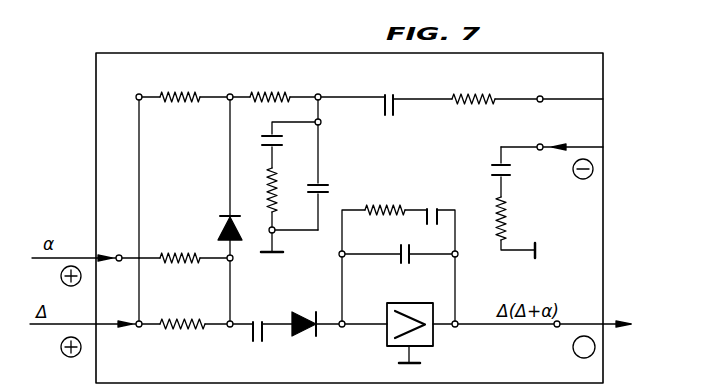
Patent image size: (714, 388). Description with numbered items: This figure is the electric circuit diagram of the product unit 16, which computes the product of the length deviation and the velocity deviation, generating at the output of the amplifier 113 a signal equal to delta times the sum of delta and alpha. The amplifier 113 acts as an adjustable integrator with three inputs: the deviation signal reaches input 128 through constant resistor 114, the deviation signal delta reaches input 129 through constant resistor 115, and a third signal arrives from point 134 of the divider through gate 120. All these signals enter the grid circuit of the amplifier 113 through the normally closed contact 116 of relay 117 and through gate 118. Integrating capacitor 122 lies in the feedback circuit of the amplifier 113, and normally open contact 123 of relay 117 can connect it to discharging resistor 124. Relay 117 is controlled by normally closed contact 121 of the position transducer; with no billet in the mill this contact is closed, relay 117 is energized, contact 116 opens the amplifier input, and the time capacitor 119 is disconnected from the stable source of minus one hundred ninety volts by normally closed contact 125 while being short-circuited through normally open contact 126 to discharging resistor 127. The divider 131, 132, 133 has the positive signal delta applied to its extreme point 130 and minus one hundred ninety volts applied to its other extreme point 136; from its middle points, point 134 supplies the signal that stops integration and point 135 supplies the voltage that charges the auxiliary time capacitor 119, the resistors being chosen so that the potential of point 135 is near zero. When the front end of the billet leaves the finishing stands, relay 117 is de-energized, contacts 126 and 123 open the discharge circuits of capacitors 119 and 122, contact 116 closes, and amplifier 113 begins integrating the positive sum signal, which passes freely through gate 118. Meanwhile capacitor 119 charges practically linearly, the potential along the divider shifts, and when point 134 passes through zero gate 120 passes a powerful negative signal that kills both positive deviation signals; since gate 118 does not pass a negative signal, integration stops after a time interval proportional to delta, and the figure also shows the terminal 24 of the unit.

The product unit 16 is at (107, 105).
The terminal 24 is at (552, 136).
The amplifier 113 is at (427, 335).
The constant resistor 114 is at (186, 278).
The constant resistor 115 is at (187, 315).
The normally closed contact 116 is at (262, 321).
The relay 117 is at (521, 227).
The gate 118 is at (337, 296).
The time capacitor 119 is at (315, 177).
The gate 120 is at (215, 226).
The normally closed contact 121 is at (487, 172).
The integrating capacitor 122 is at (398, 246).
The normally open contact 123 is at (435, 217).
The discharging resistor 124 is at (384, 217).
The normally closed contact 125 is at (386, 90).
The normally open contact 126 is at (277, 145).
The discharging resistor 127 is at (259, 210).
The input 128 is at (85, 248).
The input 129 is at (86, 314).
The point 130 is at (124, 204).
The resistor 131 is at (184, 83).
The resistor 132 is at (274, 83).
The resistor 133 is at (494, 84).
The point 134 is at (234, 140).
The point 135 is at (322, 95).
The point 136 is at (566, 83).